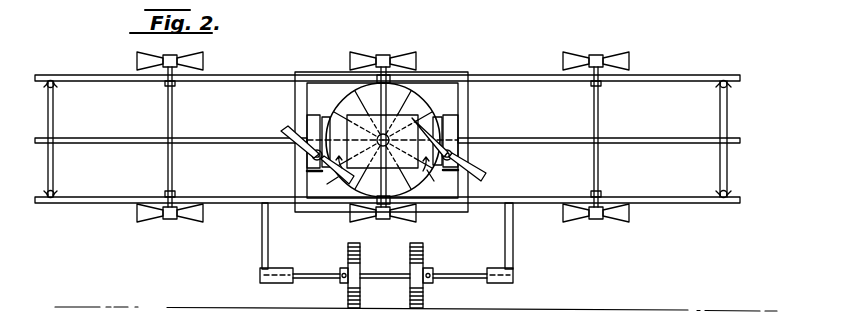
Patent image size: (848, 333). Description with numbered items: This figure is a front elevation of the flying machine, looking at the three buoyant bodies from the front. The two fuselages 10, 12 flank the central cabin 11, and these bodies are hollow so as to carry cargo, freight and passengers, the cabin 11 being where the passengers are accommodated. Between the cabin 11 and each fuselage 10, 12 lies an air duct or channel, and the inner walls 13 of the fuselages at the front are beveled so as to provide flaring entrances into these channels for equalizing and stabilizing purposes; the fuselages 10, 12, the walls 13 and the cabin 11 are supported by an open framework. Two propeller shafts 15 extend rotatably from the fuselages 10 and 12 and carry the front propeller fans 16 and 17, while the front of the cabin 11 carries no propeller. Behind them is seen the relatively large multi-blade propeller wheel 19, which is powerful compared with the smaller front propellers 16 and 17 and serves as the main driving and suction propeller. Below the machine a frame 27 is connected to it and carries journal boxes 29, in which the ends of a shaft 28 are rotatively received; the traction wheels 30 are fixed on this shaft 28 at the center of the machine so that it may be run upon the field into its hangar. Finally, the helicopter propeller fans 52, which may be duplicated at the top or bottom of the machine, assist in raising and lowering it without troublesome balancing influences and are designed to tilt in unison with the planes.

The fuselage 10 is at (308, 116).
The central cabin 11 is at (359, 118).
The fuselage 12 is at (450, 131).
The inner wall of fuselage 13 is at (322, 162).
The propeller shaft 15 is at (312, 157).
The propeller fan 16 is at (280, 123).
The propeller fan 17 is at (488, 173).
The multi-blade propeller wheel 19 is at (413, 89).
The frame 27 is at (262, 235).
The shaft 28 is at (392, 279).
The journal box 29 is at (278, 282).
The traction wheel 30 is at (348, 250).
The helicopter propeller fan 52 is at (173, 60).